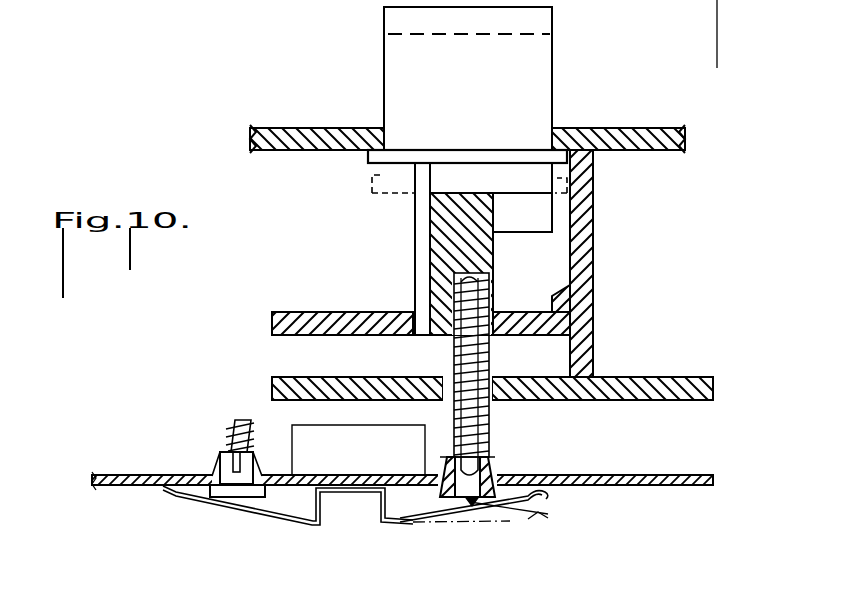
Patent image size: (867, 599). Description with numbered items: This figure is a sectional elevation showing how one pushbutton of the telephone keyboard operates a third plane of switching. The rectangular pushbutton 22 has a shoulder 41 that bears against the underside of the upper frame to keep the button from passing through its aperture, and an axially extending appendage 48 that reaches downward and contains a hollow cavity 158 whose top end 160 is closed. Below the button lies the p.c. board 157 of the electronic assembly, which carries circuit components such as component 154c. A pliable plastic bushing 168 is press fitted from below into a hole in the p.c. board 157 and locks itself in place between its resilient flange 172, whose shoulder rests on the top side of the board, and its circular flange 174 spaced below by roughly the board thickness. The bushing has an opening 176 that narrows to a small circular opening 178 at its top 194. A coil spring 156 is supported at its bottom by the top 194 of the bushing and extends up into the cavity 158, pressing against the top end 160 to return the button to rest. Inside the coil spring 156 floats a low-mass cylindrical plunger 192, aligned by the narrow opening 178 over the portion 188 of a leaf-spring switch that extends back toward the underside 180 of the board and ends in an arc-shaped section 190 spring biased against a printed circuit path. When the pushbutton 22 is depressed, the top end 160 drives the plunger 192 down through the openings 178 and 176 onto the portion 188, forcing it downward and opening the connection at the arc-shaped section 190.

The pushbutton 22 is at (553, 75).
The shoulder 41 is at (368, 160).
The axially extending appendage 48 is at (478, 365).
The component 154c is at (291, 433).
The coil spring 156 is at (478, 418).
The p.c. board 157 is at (678, 475).
The hollow cavity 158 is at (480, 276).
The top end of the cavity 160 is at (458, 264).
The bushing 168 is at (497, 463).
The resilient flange 172 is at (480, 465).
The circular flange 174 is at (485, 465).
The opening 176 is at (505, 515).
The narrow opening 178 is at (507, 463).
The underside of the p.c. board 180 is at (644, 493).
The portion of the leaf-spring switch 188 is at (410, 523).
The arc-shaped section 190 is at (546, 493).
The cylindrical plunger 192 is at (453, 417).
The top of the bushing 194 is at (447, 456).